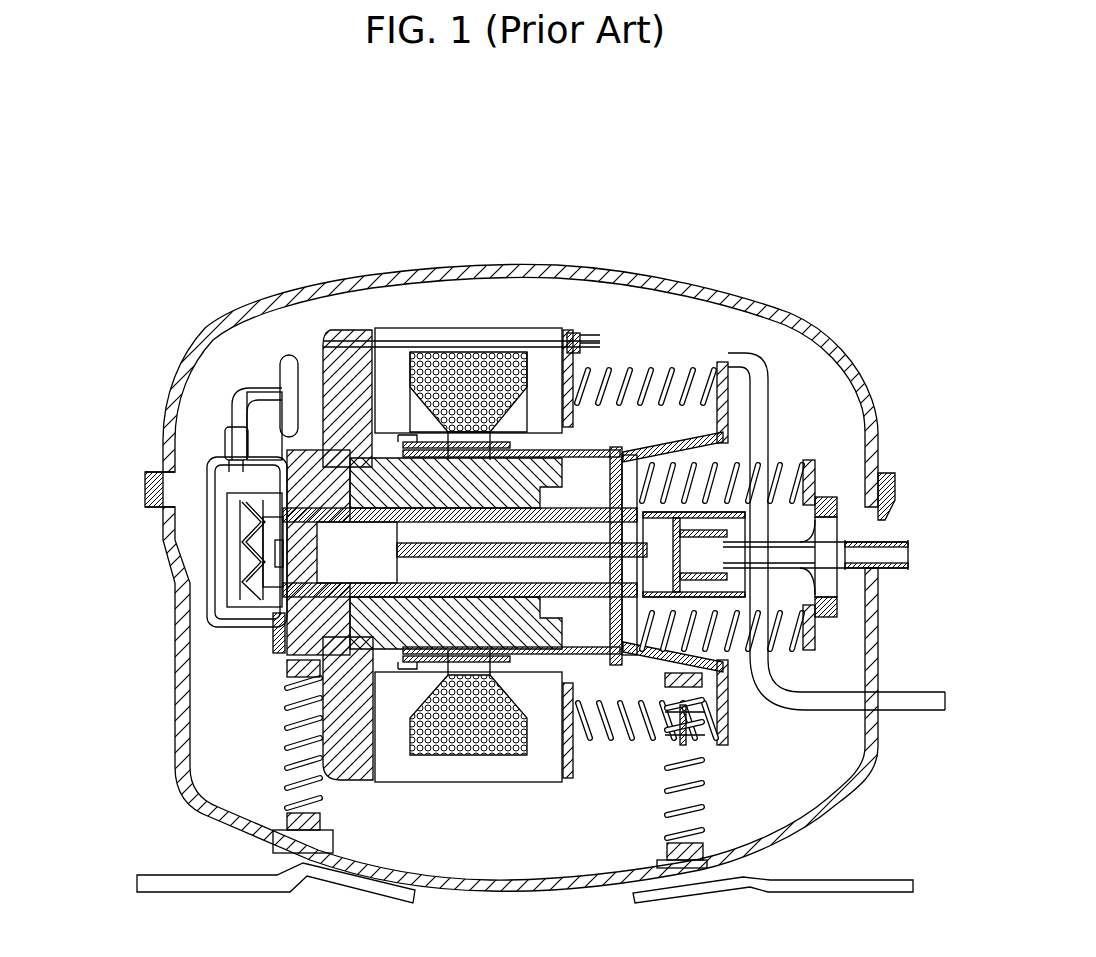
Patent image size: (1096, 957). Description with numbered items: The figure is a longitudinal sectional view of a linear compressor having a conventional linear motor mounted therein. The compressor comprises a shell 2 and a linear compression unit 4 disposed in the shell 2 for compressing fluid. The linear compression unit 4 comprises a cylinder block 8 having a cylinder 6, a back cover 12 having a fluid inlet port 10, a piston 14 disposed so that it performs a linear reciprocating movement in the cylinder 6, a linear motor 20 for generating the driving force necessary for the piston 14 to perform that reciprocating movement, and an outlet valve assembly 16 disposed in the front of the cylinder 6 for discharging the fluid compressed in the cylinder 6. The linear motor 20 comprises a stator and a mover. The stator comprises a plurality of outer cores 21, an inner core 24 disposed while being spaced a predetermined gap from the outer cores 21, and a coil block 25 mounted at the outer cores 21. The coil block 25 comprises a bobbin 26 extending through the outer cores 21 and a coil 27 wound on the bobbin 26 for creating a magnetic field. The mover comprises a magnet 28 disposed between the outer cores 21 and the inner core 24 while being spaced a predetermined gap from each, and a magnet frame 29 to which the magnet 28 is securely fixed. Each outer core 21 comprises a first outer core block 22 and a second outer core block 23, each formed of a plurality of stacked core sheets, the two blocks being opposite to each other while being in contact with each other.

The shell 2 is at (170, 375).
The linear compression unit 4 is at (248, 376).
The cylinder 6 is at (343, 497).
The cylinder block 8 is at (340, 353).
The fluid inlet port 10 is at (805, 557).
The back cover 12 is at (815, 463).
The piston 14 is at (300, 600).
The outlet valve assembly 16 is at (181, 582).
The linear motor 20 is at (493, 455).
The outer cores 21 is at (487, 474).
The first outer core block 22 is at (497, 340).
The second outer core block 23 is at (520, 467).
The inner core 24 is at (420, 477).
The coil block 25 is at (468, 457).
The bobbin 26 is at (428, 363).
The coil 27 is at (462, 340).
The magnet 28 is at (567, 445).
The magnet frame 29 is at (385, 195).